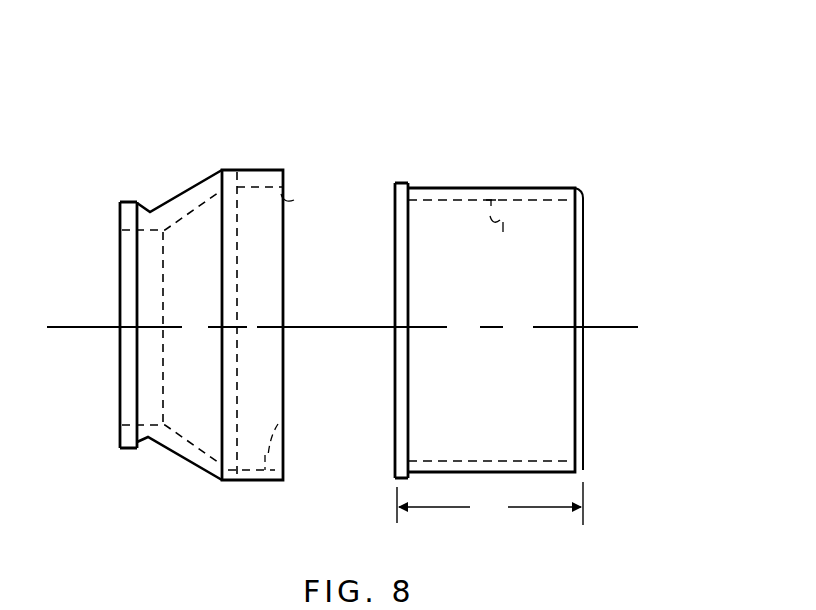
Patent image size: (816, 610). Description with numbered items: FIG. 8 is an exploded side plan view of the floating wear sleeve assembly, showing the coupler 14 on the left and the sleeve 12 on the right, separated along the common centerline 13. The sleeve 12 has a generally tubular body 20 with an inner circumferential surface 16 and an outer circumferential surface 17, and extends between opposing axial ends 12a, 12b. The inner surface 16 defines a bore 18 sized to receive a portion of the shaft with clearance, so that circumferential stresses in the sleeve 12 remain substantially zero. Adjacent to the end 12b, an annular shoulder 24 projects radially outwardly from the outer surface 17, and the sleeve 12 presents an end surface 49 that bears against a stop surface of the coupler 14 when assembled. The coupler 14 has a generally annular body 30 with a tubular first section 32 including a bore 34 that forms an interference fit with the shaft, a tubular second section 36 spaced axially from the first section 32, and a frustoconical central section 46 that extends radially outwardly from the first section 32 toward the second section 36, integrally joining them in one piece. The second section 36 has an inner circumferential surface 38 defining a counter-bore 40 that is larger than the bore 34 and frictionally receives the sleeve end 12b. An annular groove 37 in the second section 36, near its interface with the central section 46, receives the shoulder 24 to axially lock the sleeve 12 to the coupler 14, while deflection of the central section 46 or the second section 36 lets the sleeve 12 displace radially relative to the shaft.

The sleeve 12 is at (489, 294).
The axial end 12a is at (586, 413).
The axial end 12b is at (396, 212).
The centerline 13 is at (622, 328).
The coupler 14 is at (192, 304).
The inner circumferential surface 16 is at (503, 236).
The outer circumferential surface 17 is at (511, 423).
The bore 18 is at (594, 216).
The tubular body 20 is at (533, 185).
The annular shoulder 24 is at (398, 388).
The annular body 30 is at (143, 463).
The first section 32 is at (120, 206).
The bore 34 is at (128, 404).
The second section 36 is at (266, 482).
The annular groove 37 is at (258, 162).
The inner circumferential surface 38 is at (295, 424).
The bore 40 is at (299, 193).
The central section 46 is at (184, 454).
The end surface 49 is at (394, 188).